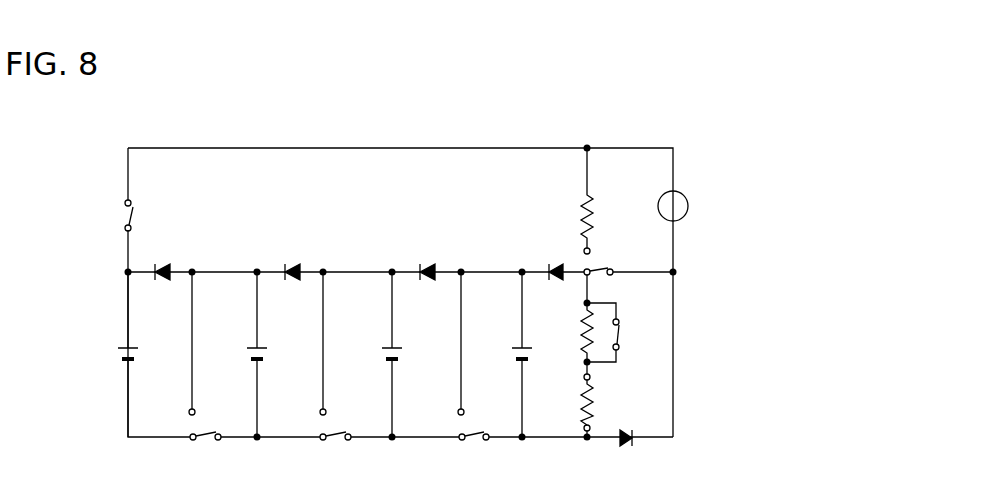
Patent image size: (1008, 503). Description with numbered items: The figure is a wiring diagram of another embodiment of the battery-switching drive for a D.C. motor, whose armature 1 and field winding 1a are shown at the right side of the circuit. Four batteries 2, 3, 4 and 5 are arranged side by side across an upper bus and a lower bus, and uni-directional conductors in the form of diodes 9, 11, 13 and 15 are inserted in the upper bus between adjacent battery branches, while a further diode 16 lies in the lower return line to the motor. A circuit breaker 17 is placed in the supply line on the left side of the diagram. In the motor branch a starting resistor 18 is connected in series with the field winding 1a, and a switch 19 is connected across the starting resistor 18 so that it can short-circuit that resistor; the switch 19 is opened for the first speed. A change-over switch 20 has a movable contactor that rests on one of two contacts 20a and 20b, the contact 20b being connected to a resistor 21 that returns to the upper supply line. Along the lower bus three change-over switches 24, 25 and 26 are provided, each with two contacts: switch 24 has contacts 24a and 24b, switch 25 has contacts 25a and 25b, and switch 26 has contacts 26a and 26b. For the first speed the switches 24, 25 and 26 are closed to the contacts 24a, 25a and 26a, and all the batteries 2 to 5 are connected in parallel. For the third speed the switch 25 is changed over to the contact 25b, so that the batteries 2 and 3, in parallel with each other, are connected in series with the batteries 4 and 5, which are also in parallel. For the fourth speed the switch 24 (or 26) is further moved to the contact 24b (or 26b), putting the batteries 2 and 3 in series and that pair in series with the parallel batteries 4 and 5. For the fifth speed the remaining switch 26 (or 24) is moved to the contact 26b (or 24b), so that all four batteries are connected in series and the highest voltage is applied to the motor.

The armature 1 is at (682, 218).
The field winding 1a is at (596, 427).
The battery 2 is at (122, 362).
The battery 3 is at (252, 362).
The battery 4 is at (388, 362).
The battery 5 is at (518, 362).
The diode 9 is at (165, 266).
The diode 11 is at (296, 266).
The diode 13 is at (432, 266).
The diode 15 is at (553, 266).
The diode 16 is at (630, 447).
The circuit breaker 17 is at (135, 211).
The starting resistor 18 is at (580, 330).
The switch 19 is at (620, 332).
The change-over switch 20 is at (604, 268).
The contact 20a is at (612, 276).
The contact 20b is at (592, 250).
The resistor 21 is at (580, 210).
The change-over switch 24 is at (205, 436).
The contact 24a is at (218, 441).
The contact 24b is at (165, 351).
The change-over switch 25 is at (335, 440).
The contact 25a is at (348, 441).
The contact 25b is at (296, 351).
The change-over switch 26 is at (472, 440).
The contact 26a is at (486, 441).
The contact 26b is at (433, 351).